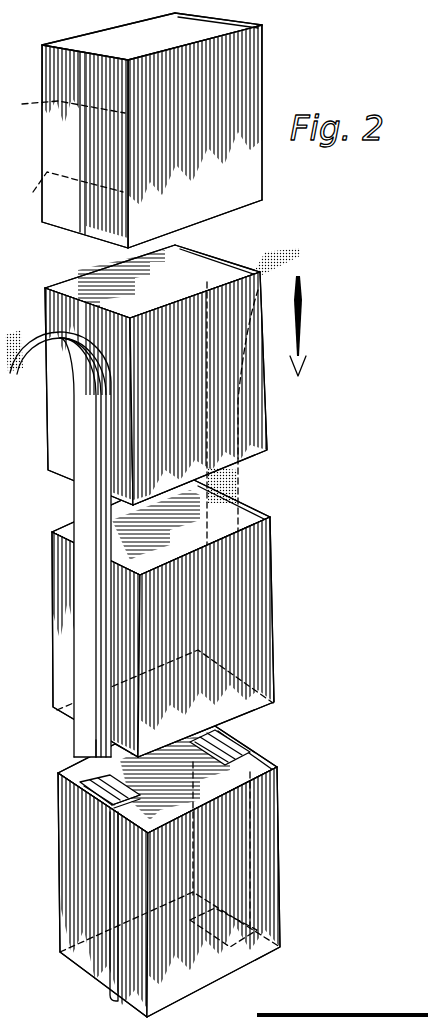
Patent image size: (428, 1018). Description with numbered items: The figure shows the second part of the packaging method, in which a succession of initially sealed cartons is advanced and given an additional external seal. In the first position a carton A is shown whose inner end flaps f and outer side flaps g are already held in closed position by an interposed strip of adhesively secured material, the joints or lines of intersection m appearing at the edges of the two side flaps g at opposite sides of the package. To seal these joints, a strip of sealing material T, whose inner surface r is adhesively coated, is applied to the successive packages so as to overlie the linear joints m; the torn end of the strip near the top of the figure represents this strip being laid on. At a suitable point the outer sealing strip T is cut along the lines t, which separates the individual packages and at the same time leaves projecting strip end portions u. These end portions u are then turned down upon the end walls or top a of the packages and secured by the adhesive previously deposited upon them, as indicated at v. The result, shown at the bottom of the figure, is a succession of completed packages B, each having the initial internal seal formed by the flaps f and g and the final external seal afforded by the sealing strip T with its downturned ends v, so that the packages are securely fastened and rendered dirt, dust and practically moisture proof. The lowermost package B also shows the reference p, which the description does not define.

The carton A is at (141, 130).
The top a is at (161, 431).
The end flaps f is at (67, 101).
The side flaps g is at (110, 143).
The linear joints m is at (100, 173).
The inner surface r is at (22, 348).
The sealing strip T is at (84, 490).
The projecting strip end portions u is at (92, 737).
The cutting lines t is at (80, 752).
The downturned ends v is at (107, 790).
The completed packages B is at (170, 889).
The base strip p is at (410, 1015).